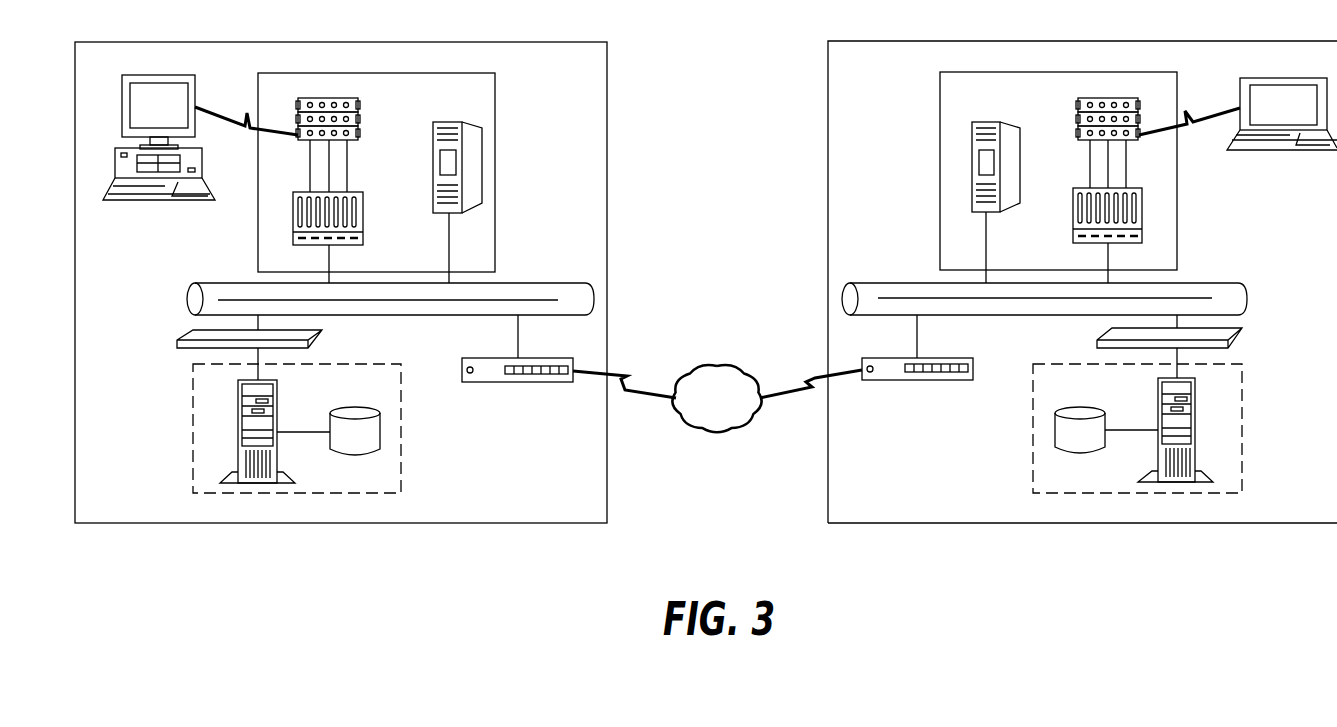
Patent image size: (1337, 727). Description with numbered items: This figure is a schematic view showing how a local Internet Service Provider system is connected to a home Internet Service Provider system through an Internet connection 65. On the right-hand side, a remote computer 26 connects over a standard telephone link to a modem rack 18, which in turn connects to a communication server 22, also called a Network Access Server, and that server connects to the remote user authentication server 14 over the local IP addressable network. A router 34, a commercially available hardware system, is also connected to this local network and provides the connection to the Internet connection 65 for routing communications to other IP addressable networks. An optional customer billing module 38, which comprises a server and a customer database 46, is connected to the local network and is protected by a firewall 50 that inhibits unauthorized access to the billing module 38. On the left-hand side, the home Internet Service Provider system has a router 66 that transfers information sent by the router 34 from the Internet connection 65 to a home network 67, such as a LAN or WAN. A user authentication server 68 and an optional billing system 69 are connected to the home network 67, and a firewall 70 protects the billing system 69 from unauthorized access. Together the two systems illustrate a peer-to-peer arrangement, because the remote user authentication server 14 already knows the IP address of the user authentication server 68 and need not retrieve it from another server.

The remote user authentication server 14 is at (1021, 166).
The modem rack 18 is at (1077, 121).
The communication server 22 is at (1072, 219).
The remote computer 26 is at (1292, 77).
The router 34 is at (917, 380).
The customer billing module 38 is at (1161, 420).
The customer database 46 is at (1090, 407).
The firewall 50 is at (1243, 336).
The Internet connection 65 is at (717, 365).
The router 66 is at (517, 382).
The home network 67 is at (553, 283).
The user authentication server 68 is at (432, 167).
The billing system 69 is at (191, 430).
The firewall 70 is at (324, 338).